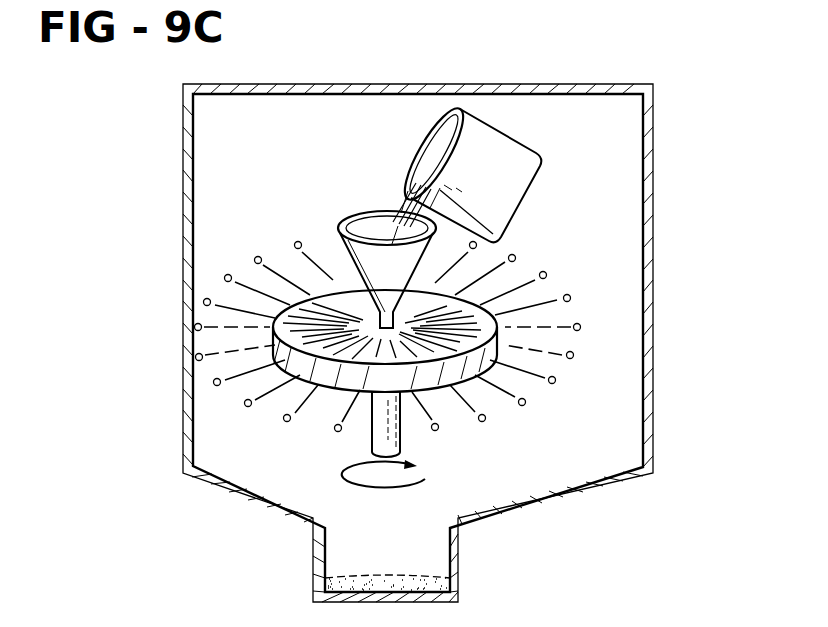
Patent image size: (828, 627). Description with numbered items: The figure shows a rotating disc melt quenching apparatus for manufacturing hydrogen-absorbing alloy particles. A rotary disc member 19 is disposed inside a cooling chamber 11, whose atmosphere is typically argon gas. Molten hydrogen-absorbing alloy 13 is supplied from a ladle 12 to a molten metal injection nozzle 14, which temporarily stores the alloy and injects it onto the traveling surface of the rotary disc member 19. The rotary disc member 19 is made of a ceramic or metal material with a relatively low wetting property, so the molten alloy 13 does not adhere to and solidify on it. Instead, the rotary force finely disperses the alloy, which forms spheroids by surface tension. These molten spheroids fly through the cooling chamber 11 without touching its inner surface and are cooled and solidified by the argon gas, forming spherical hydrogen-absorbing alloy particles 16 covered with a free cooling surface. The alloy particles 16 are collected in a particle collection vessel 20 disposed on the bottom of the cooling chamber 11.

The cooling chamber 11 is at (652, 218).
The ladle 12 is at (532, 187).
The molten hydrogen-absorbing alloy 13 is at (400, 192).
The molten metal injection nozzle 14 is at (530, 298).
The hydrogen-absorbing alloy particles 16 is at (192, 355).
The rotary disc member 19 is at (533, 330).
The particle collection vessel 20 is at (458, 563).